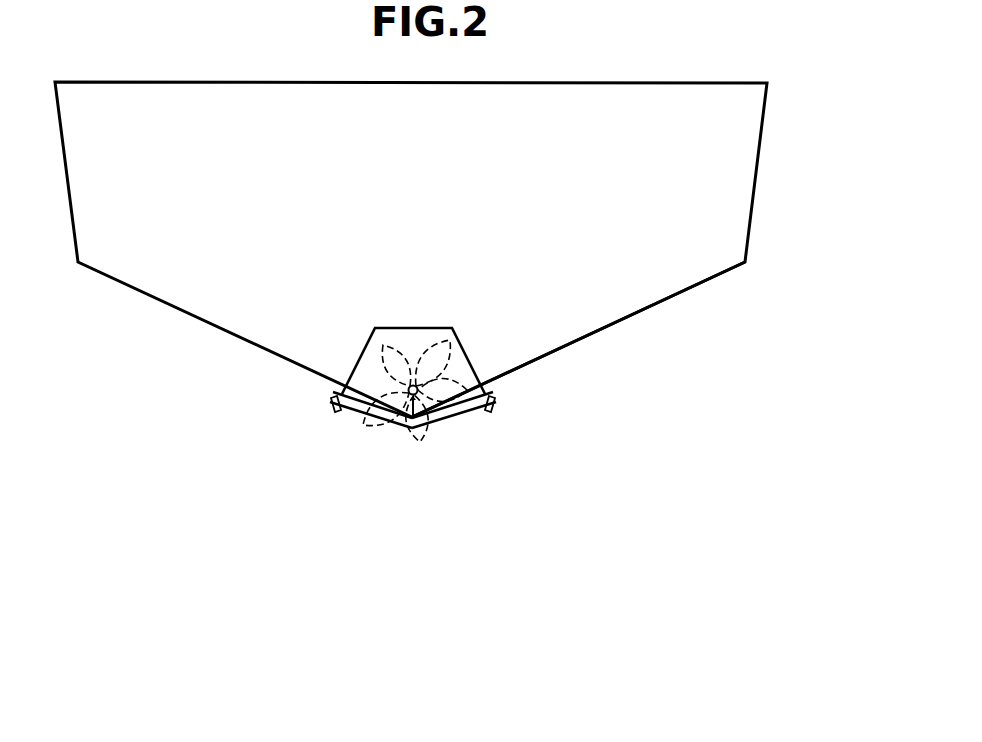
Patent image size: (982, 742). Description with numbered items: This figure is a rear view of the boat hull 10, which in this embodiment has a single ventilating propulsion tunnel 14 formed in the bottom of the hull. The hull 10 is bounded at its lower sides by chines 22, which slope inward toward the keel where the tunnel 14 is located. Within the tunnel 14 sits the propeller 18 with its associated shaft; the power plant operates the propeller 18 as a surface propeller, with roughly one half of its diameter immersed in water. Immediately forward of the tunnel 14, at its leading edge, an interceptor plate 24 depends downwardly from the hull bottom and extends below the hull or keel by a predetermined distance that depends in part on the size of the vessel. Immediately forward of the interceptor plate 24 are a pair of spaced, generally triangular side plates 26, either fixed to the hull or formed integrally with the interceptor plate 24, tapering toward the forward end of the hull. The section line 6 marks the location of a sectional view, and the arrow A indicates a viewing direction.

The boat hull 10 is at (757, 170).
The chines 22 is at (749, 242).
The ventilating propulsion tunnel 14 is at (382, 327).
The propeller 18 is at (437, 440).
The interceptor plate 24 is at (342, 411).
The side plates 26 is at (497, 410).
The section line 6- 6 is at (410, 303).
The direction arrow A is at (631, 361).